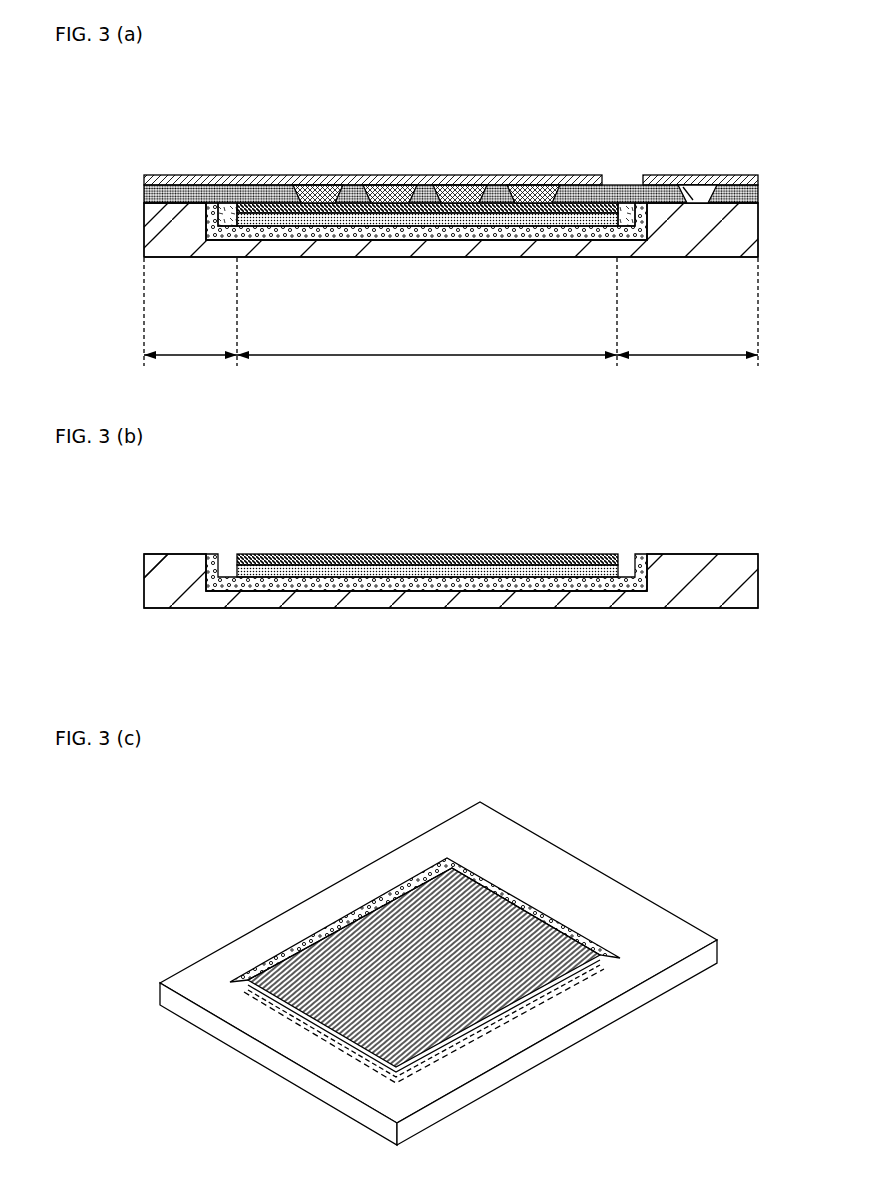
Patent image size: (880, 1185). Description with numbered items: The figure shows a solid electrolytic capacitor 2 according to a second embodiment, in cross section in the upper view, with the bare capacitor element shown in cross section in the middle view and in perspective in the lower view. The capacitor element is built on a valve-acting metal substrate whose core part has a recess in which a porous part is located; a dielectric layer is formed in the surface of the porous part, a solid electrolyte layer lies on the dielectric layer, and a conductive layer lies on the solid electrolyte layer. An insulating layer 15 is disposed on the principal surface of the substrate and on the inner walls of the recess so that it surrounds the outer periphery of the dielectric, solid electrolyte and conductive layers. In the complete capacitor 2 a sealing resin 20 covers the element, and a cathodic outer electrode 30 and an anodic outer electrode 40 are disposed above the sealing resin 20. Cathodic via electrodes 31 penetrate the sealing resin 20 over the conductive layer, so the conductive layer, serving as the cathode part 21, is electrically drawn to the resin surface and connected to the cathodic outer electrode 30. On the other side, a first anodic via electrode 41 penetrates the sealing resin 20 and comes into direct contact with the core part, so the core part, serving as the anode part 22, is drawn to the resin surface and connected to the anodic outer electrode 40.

The solid electrolytic capacitor 2 is at (710, 111).
The insulating layer 15 is at (226, 228).
The sealing resin 20 is at (451, 164).
The cathode part 21 is at (427, 369).
The anode part 22 is at (451, 369).
The cathodic outer electrode 30 is at (220, 175).
The cathodic via electrodes 31 is at (517, 186).
The anodic outer electrode 40 is at (728, 176).
The first anodic via electrode 41 is at (705, 196).